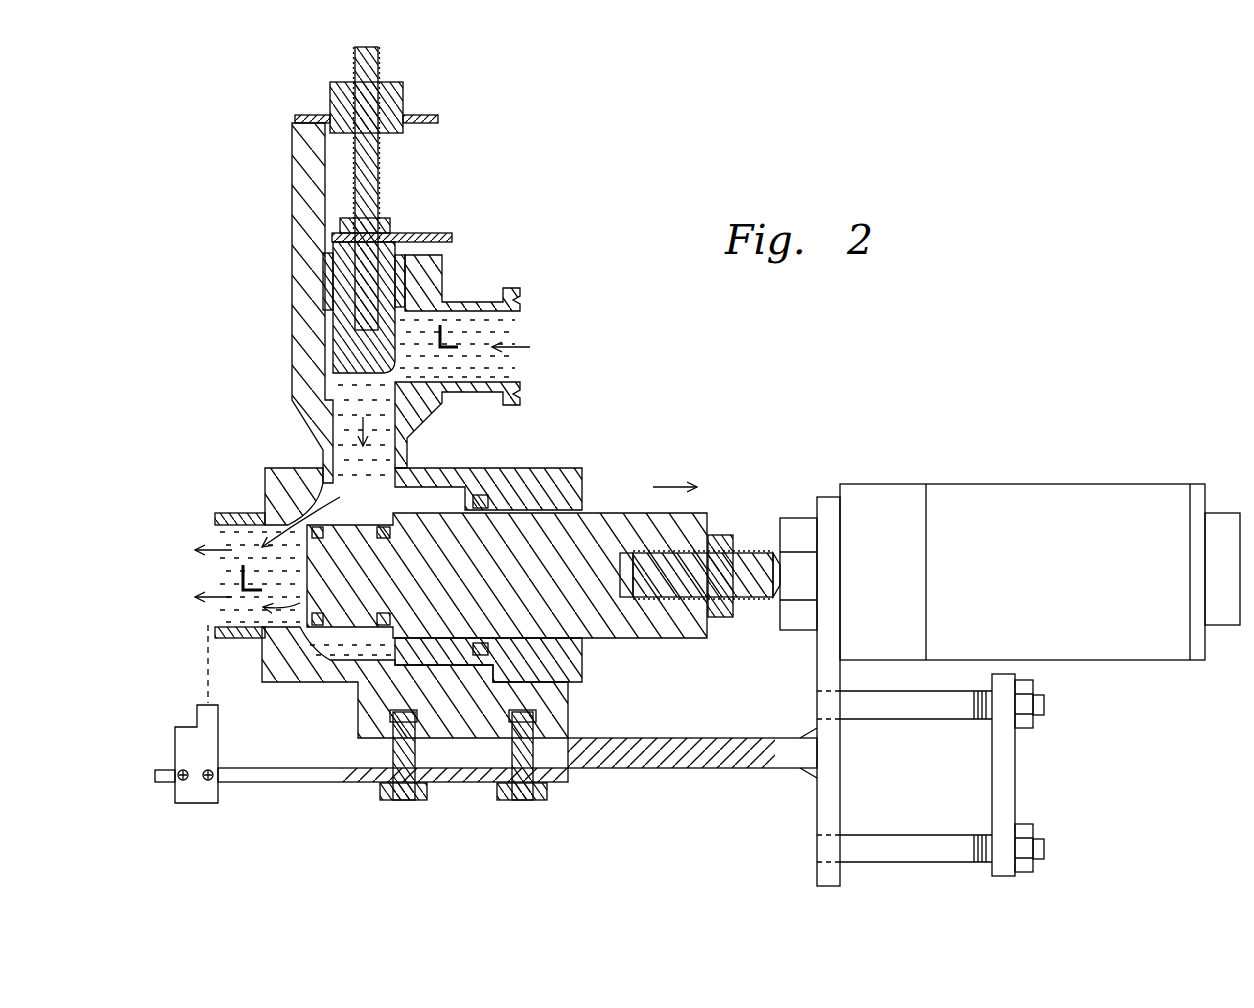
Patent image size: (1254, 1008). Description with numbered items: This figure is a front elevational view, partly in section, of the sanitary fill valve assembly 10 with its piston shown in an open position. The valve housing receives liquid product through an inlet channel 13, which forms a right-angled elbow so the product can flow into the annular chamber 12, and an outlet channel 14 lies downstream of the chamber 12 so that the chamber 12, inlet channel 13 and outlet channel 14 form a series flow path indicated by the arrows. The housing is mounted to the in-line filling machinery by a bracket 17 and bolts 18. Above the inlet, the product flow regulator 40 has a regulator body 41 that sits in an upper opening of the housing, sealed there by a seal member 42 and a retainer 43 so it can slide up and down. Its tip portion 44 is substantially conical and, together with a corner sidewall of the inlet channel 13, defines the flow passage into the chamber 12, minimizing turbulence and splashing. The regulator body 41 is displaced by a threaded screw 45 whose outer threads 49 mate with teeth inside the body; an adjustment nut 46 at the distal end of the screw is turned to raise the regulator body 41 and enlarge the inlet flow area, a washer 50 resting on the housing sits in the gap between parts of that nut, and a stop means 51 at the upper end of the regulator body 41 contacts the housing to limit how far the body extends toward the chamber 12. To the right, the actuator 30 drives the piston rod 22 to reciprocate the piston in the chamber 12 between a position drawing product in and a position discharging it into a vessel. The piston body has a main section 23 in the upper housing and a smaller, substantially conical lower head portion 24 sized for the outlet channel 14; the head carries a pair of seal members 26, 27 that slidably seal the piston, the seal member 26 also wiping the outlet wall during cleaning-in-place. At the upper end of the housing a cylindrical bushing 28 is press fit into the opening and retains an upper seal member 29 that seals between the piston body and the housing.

The sanitary fill valve assembly 10 is at (548, 138).
The annular chamber 12 is at (507, 589).
The inlet channel 13 is at (476, 302).
The outlet channel 14 is at (225, 512).
The bracket 17 is at (307, 783).
The bolts 18 is at (522, 800).
The piston rod 22 is at (745, 600).
The main section 23 is at (610, 510).
The lower head portion 24 is at (342, 522).
The seal member 26 is at (320, 524).
The seal member 27 is at (390, 638).
The cylindrical bushing 28 is at (585, 662).
The upper seal member 29 is at (485, 495).
The actuator 30 is at (975, 484).
The product flow regulator 40 is at (274, 82).
The regulator body 41 is at (345, 352).
The seal member 42 is at (405, 292).
The retainer 43 is at (323, 262).
The tip portion 44 is at (338, 377).
The threaded screw 45 is at (380, 62).
The adjustment nut 46 is at (405, 92).
The outer threads 49 is at (380, 192).
The washer 50 is at (295, 119).
The stop means 51 is at (452, 238).